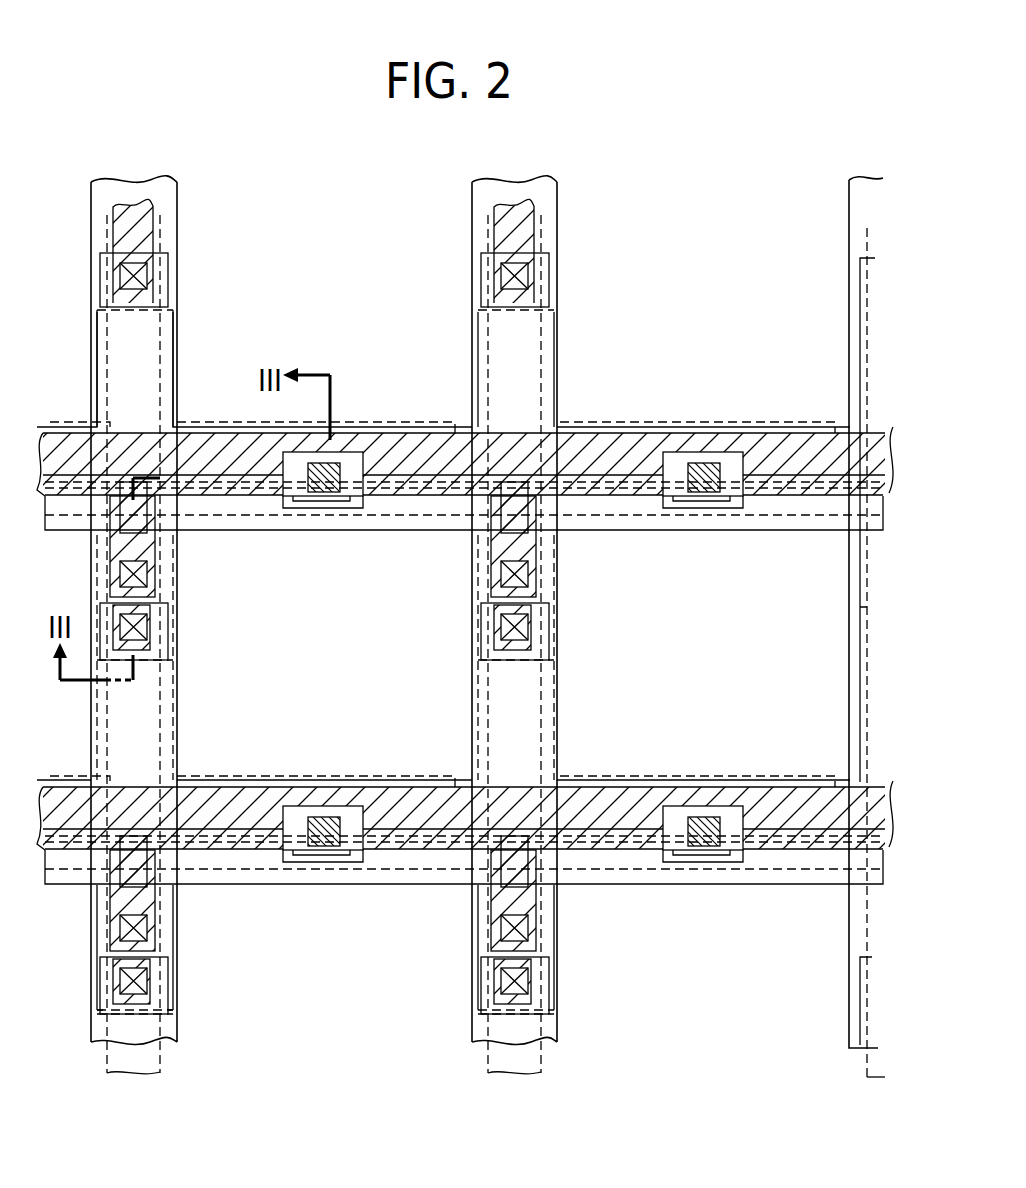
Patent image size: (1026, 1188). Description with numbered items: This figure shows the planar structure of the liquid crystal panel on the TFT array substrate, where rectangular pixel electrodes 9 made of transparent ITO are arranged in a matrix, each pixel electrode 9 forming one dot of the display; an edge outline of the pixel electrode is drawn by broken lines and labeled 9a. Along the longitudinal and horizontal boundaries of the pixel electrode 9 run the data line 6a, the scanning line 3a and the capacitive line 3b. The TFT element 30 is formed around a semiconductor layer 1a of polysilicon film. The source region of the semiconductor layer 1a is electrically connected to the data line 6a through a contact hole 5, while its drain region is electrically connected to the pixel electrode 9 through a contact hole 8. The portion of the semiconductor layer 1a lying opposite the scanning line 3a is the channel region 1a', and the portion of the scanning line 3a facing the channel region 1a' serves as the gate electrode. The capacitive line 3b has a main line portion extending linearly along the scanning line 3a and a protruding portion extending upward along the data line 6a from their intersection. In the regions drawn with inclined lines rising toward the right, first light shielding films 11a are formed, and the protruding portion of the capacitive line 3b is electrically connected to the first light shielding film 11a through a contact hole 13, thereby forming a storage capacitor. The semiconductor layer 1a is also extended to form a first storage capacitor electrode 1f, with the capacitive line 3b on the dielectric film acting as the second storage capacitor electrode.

The semiconductor layer 1a is at (466, 644).
The channel region 1a' is at (568, 889).
The first storage capacitor electrode 1f is at (173, 687).
The scanning line 3a is at (342, 877).
The capacitive line 3b is at (307, 778).
The contact hole 5 is at (527, 927).
The data line 6a is at (557, 627).
The contact hole 8 is at (693, 853).
The pixel electrode 9 is at (365, 642).
The pixel electrode edge 9a is at (805, 518).
The first light shielding film 11a is at (127, 787).
The contact hole 13 is at (143, 623).
The TFT element 30 is at (195, 950).